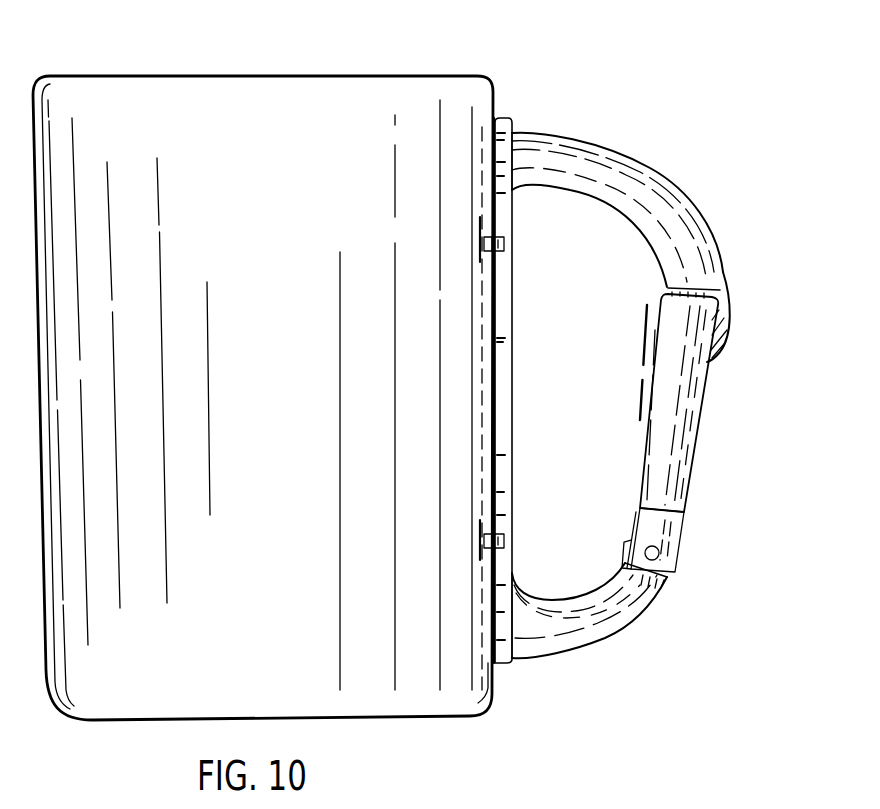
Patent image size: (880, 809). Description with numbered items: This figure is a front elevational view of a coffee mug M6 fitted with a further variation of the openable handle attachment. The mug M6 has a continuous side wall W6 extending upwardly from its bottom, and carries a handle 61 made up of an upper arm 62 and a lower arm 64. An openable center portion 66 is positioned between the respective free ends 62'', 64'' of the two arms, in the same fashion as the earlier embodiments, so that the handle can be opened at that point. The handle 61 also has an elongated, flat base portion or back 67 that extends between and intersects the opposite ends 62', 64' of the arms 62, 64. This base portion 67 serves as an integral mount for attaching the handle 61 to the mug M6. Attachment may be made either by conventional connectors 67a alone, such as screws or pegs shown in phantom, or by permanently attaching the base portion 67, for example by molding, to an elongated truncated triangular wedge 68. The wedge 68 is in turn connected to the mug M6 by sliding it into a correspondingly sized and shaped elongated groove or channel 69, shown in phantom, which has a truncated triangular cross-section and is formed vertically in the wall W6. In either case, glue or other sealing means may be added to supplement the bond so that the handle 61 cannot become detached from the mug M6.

The coffee mug M6 is at (279, 56).
The side wall W6 is at (274, 262).
The handle 61 is at (700, 185).
The upper arm 62 is at (648, 219).
The end of upper arm 62' is at (546, 133).
The free end of upper arm 62'' is at (726, 282).
The lower arm 64 is at (628, 644).
The end of lower arm 64' is at (548, 649).
The free end of lower arm 64'' is at (685, 587).
The openable center portion 66 is at (677, 392).
The base portion 67 is at (512, 323).
The connectors 67a is at (505, 244).
The wedge 68 is at (484, 408).
The channel 69 is at (487, 688).